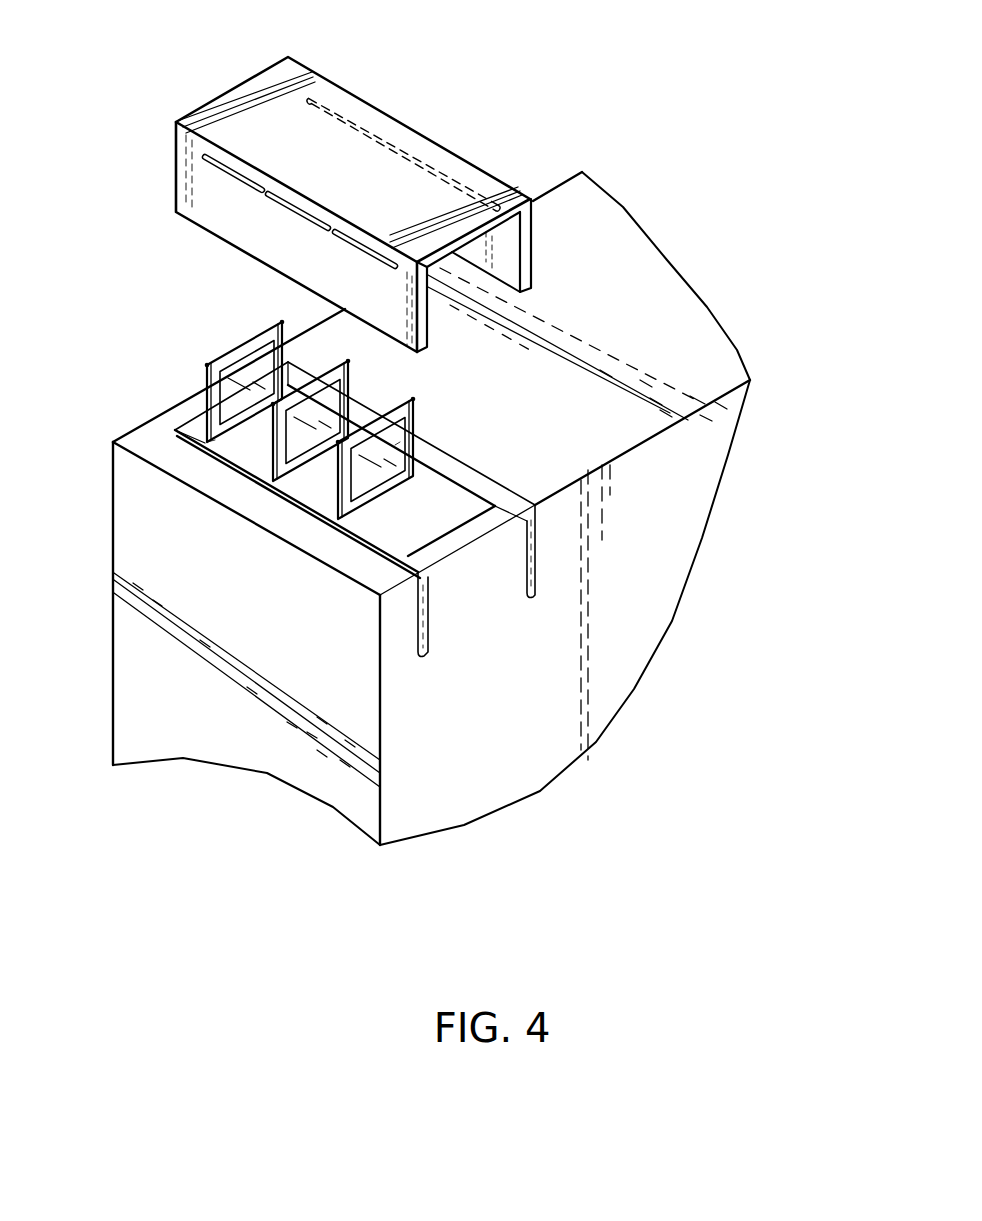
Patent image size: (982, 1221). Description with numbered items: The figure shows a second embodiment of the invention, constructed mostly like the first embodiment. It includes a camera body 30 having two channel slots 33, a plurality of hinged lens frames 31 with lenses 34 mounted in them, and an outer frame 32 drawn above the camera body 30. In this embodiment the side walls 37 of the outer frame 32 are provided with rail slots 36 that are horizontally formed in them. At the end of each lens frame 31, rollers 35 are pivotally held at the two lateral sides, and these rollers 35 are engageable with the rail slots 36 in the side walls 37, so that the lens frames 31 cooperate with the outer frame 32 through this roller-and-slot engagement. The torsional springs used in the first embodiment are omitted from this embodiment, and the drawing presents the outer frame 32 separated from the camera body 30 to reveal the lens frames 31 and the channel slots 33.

The camera body 30 is at (487, 508).
The hinged lens frame 31 is at (293, 464).
The outer frame 32 is at (355, 177).
The channel slot 33 is at (533, 561).
The lens 34 is at (207, 446).
The roller 35 is at (205, 367).
The rail slot 36 is at (402, 142).
The side wall 37 is at (527, 240).